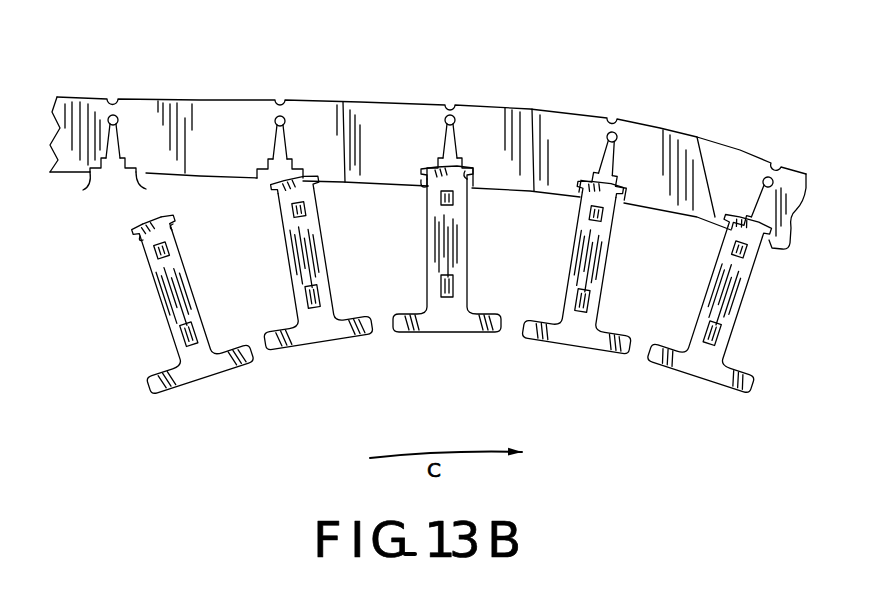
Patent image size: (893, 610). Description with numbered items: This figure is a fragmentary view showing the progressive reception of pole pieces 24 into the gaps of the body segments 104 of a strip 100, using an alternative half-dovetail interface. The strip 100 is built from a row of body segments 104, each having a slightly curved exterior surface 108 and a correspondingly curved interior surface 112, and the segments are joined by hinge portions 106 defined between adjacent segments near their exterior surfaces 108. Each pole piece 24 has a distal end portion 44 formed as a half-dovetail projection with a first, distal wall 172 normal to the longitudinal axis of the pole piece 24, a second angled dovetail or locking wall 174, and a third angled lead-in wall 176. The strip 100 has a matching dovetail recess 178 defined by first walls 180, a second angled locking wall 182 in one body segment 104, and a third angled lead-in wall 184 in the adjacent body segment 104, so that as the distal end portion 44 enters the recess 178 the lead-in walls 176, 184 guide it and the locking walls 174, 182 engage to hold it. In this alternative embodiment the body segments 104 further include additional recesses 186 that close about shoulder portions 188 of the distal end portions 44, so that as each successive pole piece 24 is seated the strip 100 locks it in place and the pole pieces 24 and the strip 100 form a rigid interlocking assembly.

The strip 100 is at (417, 236).
The exterior surface 108 is at (408, 144).
The body segments 104 is at (237, 138).
The hinge portions 106 is at (392, 136).
The interior surface 112 is at (690, 218).
The pole pieces 24 is at (436, 285).
The distal end portion 44 is at (436, 203).
The first distal wall 172 is at (152, 225).
The second angled dovetail or locking wall 174 is at (138, 231).
The third angled lead-in wall 176 is at (146, 214).
The dovetail recess 178 is at (100, 130).
The first walls 180 is at (108, 113).
The second angled dovetail or locking wall 182 is at (96, 166).
The third angled lead-in wall 184 is at (134, 163).
The additional recesses 186 is at (83, 190).
The shoulder portions 188 is at (139, 236).